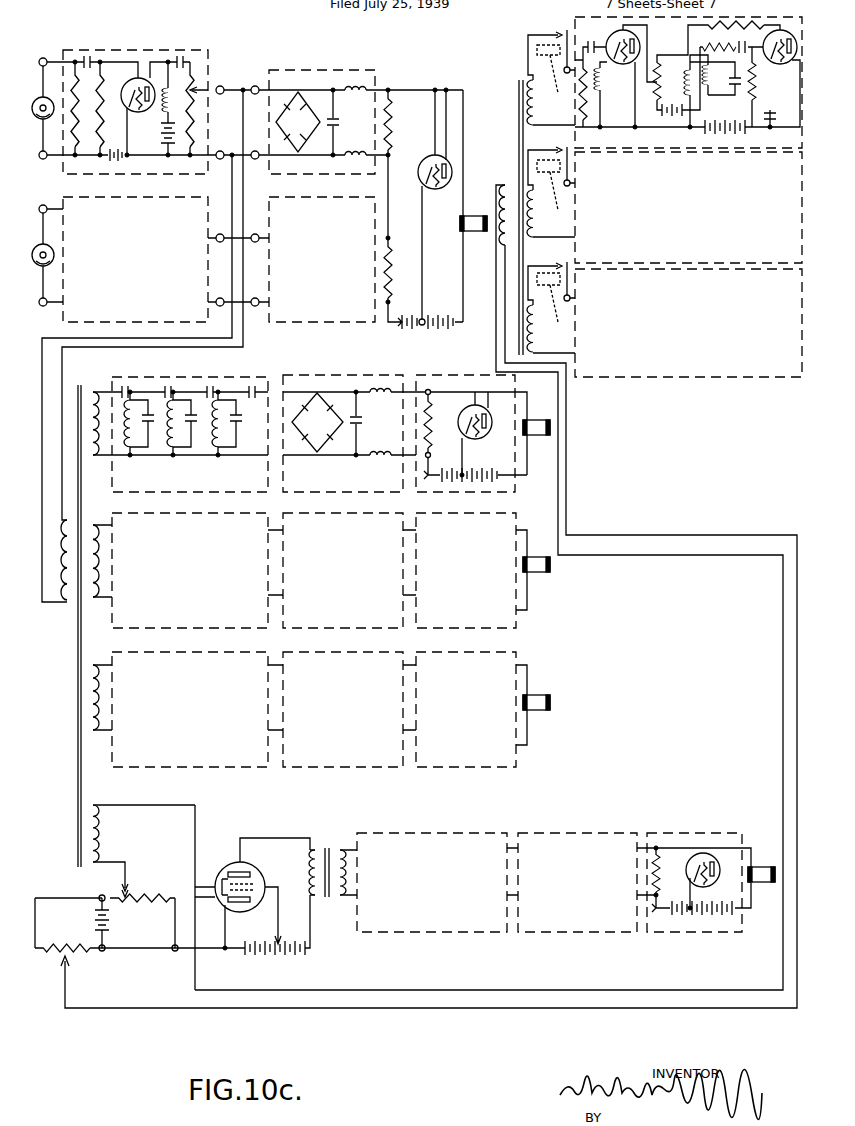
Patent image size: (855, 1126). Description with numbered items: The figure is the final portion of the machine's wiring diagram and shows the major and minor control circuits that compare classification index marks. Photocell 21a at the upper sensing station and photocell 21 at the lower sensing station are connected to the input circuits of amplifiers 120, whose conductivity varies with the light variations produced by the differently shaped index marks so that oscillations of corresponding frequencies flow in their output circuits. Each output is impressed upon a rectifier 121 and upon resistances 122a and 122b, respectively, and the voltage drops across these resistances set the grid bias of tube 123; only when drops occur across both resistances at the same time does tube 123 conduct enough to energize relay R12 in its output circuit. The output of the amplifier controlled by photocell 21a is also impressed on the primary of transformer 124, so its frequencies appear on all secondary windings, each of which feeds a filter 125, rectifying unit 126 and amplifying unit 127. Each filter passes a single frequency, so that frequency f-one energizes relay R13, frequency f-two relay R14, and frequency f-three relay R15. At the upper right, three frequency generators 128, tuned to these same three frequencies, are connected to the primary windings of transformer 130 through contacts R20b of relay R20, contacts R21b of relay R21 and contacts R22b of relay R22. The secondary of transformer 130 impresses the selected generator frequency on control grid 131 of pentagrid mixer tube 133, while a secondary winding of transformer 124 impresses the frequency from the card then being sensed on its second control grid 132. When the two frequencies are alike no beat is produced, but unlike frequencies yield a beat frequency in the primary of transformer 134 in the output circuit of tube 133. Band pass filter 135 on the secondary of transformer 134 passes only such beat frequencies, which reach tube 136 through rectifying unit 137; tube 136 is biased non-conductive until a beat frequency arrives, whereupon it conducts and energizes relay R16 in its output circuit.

The photocell 21a is at (40, 101).
The photocell 21 is at (40, 248).
The amplifier 120 is at (121, 56).
The rectifier 121 is at (299, 77).
The resistance 122a is at (393, 108).
The resistance 122b is at (396, 272).
The tube 123 is at (428, 161).
The relay R12 is at (474, 214).
The transformer 130 is at (513, 183).
The frequency generator 128 is at (597, 25).
The contacts R20b is at (555, 34).
The relay R20 is at (551, 102).
The contacts R21b is at (551, 170).
The relay R21 is at (551, 213).
The contacts R22b is at (551, 284).
The relay R22 is at (551, 329).
The transformer 124 is at (72, 608).
The filter 125 is at (226, 379).
The rectifying unit 126 is at (339, 379).
The amplifying unit 127 is at (468, 380).
The relay R13 is at (537, 419).
The relay R14 is at (536, 556).
The relay R15 is at (539, 694).
The control grid 131 is at (268, 905).
The control grid 132 is at (235, 870).
The pentagrid mixer tube 133 is at (234, 848).
The transformer 134 is at (326, 842).
The band pass filter 135 is at (430, 838).
The rectifying unit 137 is at (573, 838).
The tube 136 is at (706, 848).
The relay R16 is at (760, 865).